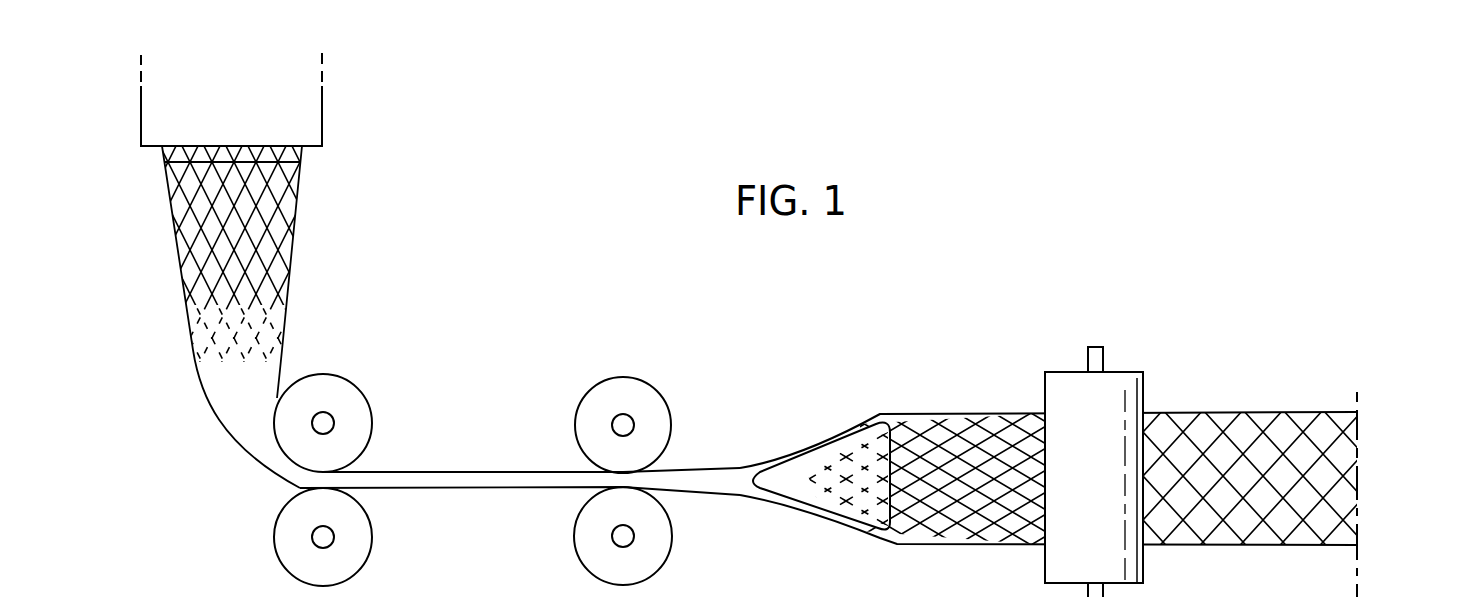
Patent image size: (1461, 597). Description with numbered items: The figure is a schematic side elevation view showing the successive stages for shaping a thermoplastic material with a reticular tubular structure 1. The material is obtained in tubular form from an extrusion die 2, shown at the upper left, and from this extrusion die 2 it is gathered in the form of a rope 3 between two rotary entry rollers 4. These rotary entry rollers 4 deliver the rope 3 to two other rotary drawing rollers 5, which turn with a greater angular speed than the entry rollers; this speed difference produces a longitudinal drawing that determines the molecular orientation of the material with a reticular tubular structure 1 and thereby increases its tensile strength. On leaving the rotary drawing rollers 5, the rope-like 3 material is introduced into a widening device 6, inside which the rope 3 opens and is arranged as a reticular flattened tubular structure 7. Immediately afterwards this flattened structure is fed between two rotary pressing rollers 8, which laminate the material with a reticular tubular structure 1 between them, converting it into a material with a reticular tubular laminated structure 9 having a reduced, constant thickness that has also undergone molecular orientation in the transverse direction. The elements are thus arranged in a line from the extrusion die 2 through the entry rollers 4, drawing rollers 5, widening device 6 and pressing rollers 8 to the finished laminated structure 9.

The material with a reticular tubular structure 1 is at (304, 253).
The extrusion die 2 is at (287, 118).
The rope 3 is at (460, 478).
The rotary entry rollers 4 is at (340, 398).
The rotary drawing rollers 5 is at (655, 408).
The widening device 6 is at (805, 465).
The reticular flattened tubular structure 7 is at (930, 410).
The rotary pressing rollers 8 is at (1110, 393).
The material with a reticular tubular laminated structure 9 is at (1247, 410).